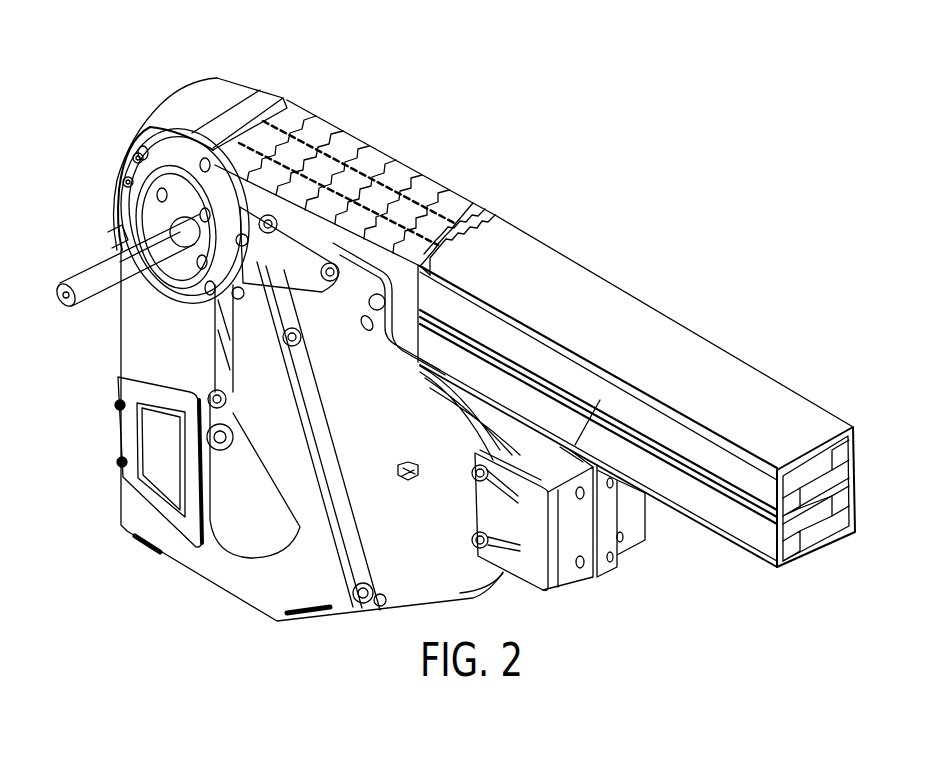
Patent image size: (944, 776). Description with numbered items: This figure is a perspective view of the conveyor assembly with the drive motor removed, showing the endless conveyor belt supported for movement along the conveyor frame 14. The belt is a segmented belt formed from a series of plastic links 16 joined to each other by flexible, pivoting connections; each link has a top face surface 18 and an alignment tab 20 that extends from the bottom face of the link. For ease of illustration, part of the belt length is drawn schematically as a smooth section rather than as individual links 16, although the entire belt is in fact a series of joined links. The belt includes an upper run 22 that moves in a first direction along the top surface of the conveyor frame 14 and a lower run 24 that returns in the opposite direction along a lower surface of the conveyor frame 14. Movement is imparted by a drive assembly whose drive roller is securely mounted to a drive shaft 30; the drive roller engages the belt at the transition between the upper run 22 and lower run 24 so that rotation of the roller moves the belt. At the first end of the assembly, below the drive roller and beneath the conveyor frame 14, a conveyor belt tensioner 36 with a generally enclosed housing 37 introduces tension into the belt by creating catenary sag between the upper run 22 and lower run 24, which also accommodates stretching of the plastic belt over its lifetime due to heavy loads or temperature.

The conveyor frame 14 is at (800, 555).
The plastic links 16 is at (343, 133).
The top face surface 18 is at (273, 127).
The alignment tab 20 is at (807, 458).
The upper run 22 is at (598, 280).
The lower run 24 is at (717, 533).
The drive shaft 30 is at (72, 278).
The conveyor belt tensioner 36 is at (190, 600).
The housing 37 is at (150, 352).